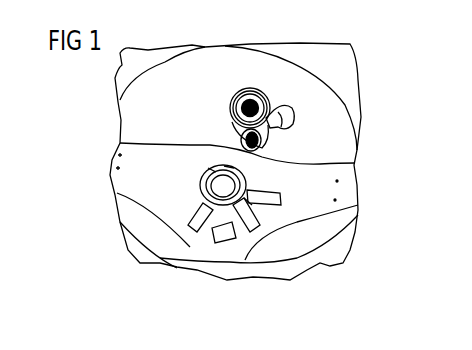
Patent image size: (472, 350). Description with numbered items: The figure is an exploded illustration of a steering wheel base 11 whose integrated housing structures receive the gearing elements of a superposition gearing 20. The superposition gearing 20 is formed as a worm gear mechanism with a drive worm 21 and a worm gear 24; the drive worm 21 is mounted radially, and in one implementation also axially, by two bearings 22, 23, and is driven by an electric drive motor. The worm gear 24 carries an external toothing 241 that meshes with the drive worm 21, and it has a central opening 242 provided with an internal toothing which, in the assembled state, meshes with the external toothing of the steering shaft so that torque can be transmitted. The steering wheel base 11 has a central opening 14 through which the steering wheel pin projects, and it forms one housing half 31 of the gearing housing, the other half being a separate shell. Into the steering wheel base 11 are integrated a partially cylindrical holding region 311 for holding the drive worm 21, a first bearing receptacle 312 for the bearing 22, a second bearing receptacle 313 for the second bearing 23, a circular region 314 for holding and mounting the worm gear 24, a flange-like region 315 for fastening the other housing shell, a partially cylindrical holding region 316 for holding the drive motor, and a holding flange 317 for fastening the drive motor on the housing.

The steering wheel base 11 is at (290, 212).
The central opening 14 is at (203, 180).
The superposition gearing 20 is at (281, 102).
The drive worm 21 is at (263, 131).
The bearing 22 is at (253, 187).
The second bearing 23 is at (286, 110).
The worm gear 24 is at (247, 99).
The housing half 31 is at (229, 215).
The external toothing 241 is at (228, 117).
The central opening 242 is at (253, 97).
The partially cylindrical holding region 311 is at (252, 205).
The first bearing receptacle 312 is at (232, 232).
The second bearing receptacle 313 is at (262, 187).
The circular region 314 is at (227, 170).
The flange-like region 315 is at (210, 163).
The partially cylindrical holding region 316 is at (197, 237).
The holding flange 317 is at (228, 232).